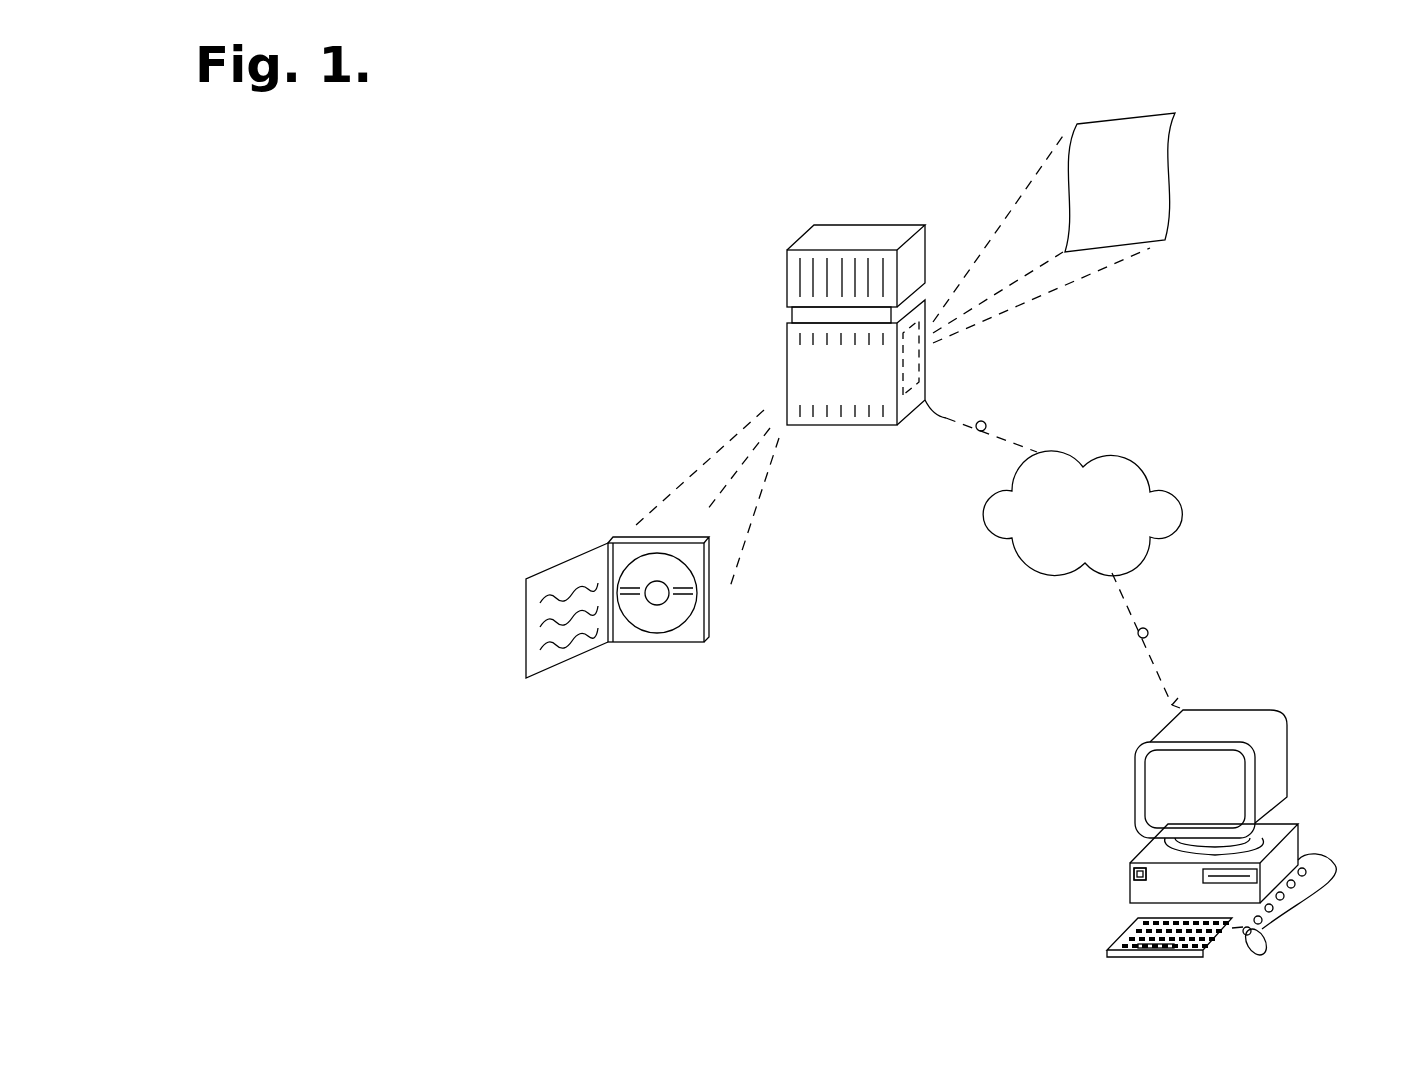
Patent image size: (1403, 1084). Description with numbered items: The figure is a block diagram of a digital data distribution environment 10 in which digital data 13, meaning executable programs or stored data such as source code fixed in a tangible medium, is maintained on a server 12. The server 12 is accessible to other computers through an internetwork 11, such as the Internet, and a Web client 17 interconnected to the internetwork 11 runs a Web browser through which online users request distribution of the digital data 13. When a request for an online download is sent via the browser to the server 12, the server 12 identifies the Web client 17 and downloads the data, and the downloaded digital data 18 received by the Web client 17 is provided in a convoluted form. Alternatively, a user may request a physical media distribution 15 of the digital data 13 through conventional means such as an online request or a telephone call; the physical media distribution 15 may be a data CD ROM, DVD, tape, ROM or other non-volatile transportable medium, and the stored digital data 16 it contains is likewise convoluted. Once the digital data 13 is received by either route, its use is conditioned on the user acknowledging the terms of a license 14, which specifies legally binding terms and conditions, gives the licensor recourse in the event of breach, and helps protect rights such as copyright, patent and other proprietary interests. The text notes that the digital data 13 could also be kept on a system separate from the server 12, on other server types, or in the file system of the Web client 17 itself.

The digital data distribution environment 10 is at (326, 149).
The internetwork 11 is at (1110, 453).
The server 12 is at (866, 224).
The digital data 13 is at (937, 388).
The license 14 is at (1170, 205).
The physical media distribution 15 is at (657, 645).
The stored digital data 16 is at (700, 597).
The Web client 17 is at (1300, 832).
The downloaded digital data 18 is at (1143, 892).